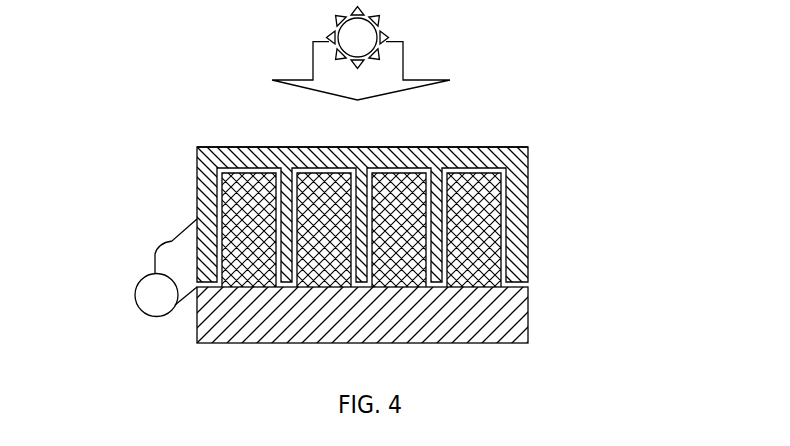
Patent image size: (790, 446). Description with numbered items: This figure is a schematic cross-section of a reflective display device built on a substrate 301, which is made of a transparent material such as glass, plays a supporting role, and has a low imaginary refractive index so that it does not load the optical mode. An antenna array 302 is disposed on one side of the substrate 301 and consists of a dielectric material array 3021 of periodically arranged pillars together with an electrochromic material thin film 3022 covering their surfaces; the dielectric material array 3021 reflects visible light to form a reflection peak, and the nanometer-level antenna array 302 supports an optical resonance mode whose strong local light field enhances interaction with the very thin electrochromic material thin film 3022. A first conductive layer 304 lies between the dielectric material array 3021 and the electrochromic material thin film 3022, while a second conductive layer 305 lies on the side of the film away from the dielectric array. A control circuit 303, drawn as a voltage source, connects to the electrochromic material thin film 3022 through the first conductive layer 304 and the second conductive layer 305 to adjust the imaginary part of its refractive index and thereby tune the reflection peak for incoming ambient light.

The substrate 301 is at (492, 323).
The antenna array 302 is at (446, 217).
The dielectric material array 3021 is at (480, 211).
The electrochromic material thin film 3022 is at (507, 168).
The control circuit 303 is at (137, 293).
The first conductive layer 304 is at (222, 200).
The second conductive layer 305 is at (220, 155).